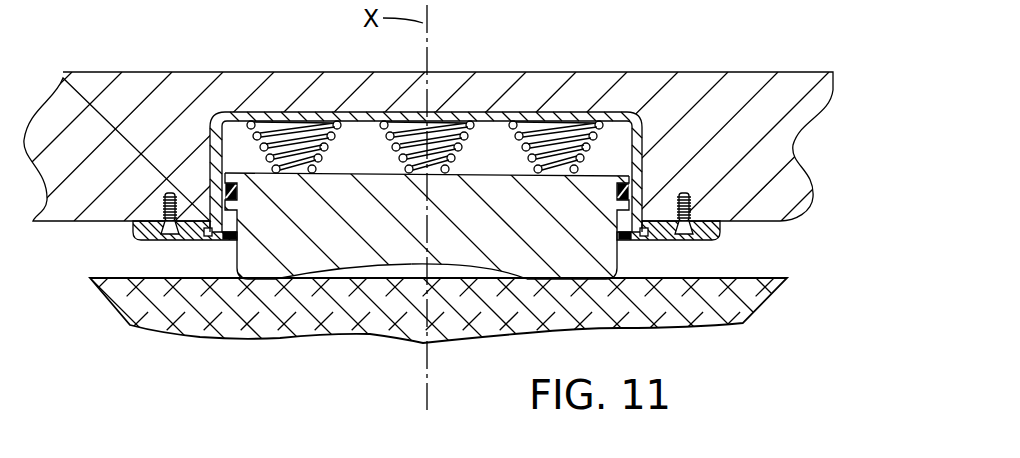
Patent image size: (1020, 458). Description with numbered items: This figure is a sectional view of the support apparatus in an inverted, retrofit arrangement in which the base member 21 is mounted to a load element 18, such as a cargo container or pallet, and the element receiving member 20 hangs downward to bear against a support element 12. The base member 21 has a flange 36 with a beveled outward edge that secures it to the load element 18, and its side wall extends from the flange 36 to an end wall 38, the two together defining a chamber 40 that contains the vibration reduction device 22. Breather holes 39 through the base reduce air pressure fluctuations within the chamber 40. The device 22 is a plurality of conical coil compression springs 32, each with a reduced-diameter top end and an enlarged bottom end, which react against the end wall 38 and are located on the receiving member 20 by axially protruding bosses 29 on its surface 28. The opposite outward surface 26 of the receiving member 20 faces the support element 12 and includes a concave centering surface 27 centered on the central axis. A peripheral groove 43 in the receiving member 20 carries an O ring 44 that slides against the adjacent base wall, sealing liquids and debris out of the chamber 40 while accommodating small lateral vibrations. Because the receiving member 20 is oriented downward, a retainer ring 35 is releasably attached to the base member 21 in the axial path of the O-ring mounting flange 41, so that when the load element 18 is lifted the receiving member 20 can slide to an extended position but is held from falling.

The support element 12 is at (760, 279).
The load element 18 is at (744, 73).
The element receiving member 20 is at (429, 211).
The base member 21 is at (437, 121).
The vibration reduction device 22 is at (491, 105).
The outward surface 26 is at (255, 279).
The concave centering surface 27 is at (390, 271).
The surface 28 is at (611, 177).
The bosses 29 is at (552, 170).
The conical coil compression springs 32 is at (316, 158).
The retainer ring 35 is at (224, 236).
The flange 36 is at (700, 243).
The end wall 38 is at (265, 120).
The breather holes 39 is at (213, 116).
The chamber 40 is at (437, 135).
The O-ring mounting flange 41 is at (238, 205).
The peripheral groove 43 is at (218, 193).
The O ring 44 is at (617, 196).